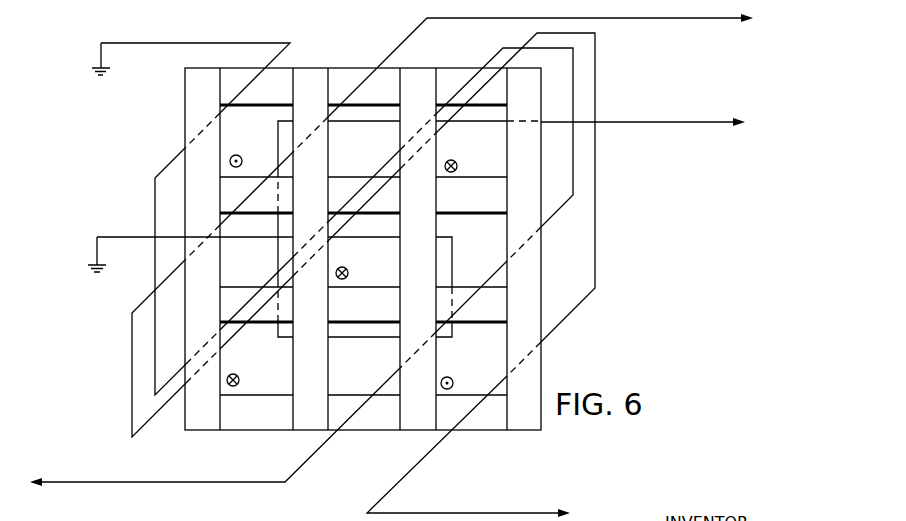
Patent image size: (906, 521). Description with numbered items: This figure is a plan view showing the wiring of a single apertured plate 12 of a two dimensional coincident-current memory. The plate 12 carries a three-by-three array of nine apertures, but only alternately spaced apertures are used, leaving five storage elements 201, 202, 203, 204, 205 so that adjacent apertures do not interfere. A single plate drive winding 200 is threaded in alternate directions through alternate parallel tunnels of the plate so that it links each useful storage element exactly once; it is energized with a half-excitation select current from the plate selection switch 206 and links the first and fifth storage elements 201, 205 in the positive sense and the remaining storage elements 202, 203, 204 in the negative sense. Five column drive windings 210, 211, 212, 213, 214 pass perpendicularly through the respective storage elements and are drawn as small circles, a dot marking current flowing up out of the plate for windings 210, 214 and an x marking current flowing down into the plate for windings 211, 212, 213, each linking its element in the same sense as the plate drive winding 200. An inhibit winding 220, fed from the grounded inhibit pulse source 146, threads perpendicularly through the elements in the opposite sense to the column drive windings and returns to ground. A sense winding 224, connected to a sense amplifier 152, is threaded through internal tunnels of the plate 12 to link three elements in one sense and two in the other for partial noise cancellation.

The apertured plate 12 is at (184, 97).
The plate drive winding 200 is at (172, 45).
The plate selection switch 206 is at (163, 463).
The sense winding 224 is at (499, 19).
The sense amplifier 152 is at (567, 270).
The inhibit winding 220 is at (613, 124).
The inhibit pulse source 146 is at (667, 149).
The first storage element 201 is at (262, 143).
The second storage element 202 is at (476, 145).
The third storage element 203 is at (374, 256).
The fourth storage element 204 is at (262, 356).
The fifth storage element 205 is at (484, 358).
The column drive winding 210 is at (242, 164).
The column drive winding 211 is at (457, 168).
The column drive winding 212 is at (348, 273).
The column drive winding 213 is at (239, 380).
The column drive winding 214 is at (453, 383).